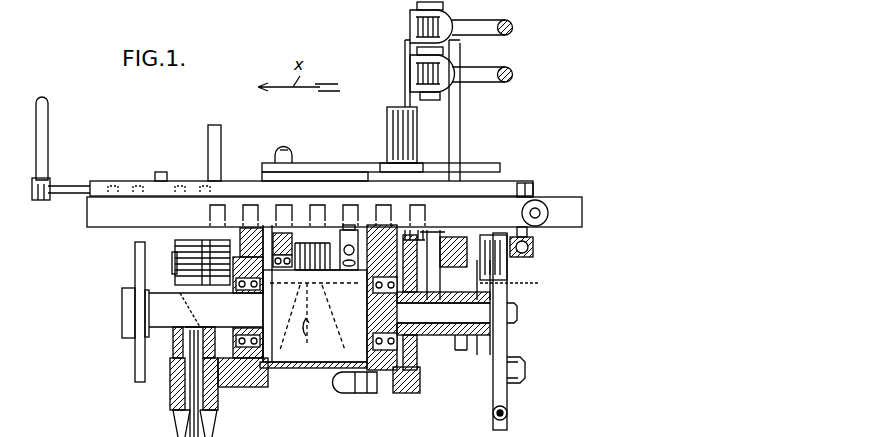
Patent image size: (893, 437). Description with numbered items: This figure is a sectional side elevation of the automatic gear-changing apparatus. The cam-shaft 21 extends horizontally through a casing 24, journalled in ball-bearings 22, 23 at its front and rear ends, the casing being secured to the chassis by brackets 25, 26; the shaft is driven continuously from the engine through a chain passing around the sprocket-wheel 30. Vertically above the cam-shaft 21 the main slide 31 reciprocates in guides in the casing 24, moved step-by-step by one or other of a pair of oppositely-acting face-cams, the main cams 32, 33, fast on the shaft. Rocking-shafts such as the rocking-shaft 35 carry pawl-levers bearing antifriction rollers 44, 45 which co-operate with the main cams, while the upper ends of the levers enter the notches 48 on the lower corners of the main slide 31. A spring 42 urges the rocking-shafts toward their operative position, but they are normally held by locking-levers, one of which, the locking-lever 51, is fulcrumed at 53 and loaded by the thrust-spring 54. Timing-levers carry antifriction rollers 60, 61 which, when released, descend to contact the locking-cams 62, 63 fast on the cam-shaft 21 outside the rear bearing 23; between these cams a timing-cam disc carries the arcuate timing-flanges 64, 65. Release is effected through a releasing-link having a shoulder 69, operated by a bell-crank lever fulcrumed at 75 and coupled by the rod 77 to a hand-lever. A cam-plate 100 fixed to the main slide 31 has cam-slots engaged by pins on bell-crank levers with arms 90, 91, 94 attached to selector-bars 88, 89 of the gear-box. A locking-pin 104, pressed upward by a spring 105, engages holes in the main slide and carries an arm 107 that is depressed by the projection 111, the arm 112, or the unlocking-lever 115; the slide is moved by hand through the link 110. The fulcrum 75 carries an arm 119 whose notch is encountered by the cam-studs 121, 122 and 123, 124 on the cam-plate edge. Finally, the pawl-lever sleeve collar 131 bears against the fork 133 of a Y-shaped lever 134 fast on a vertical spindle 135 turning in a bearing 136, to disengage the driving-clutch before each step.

The cam-shaft 21 is at (123, 303).
The ball-bearing 22 is at (250, 385).
The ball-bearing 23 is at (392, 400).
The casing 24 is at (305, 370).
The bracket 25 is at (213, 125).
The bracket 26 is at (458, 103).
The sprocket-wheel 30 is at (135, 258).
The main slide 31 is at (100, 218).
The main cam 32 is at (285, 325).
The main cam 33 is at (340, 370).
The rocking-shaft 35 is at (172, 262).
The spring 42 is at (485, 242).
The antifriction roller 44 is at (282, 233).
The antifriction roller 45 is at (348, 228).
The notches 48 is at (213, 213).
The locking-lever 51 is at (506, 398).
The fulcrum 53 is at (525, 372).
The thrust-spring 54 is at (506, 416).
The antifriction roller 60 is at (470, 242).
The antifriction roller 61 is at (510, 266).
The locking-cam 62 is at (462, 350).
The locking-cam 63 is at (506, 283).
The timing-flange 64 is at (478, 356).
The timing-flange 65 is at (506, 348).
The shoulder 69 is at (535, 250).
The fulcrum 75 is at (65, 192).
The rod 77 is at (48, 143).
The selector-bar 88 is at (513, 28).
The selector-bar 89 is at (513, 74).
The arm of bell-crank lever 90 is at (413, 25).
The arm of bell-crank lever 91 is at (413, 70).
The arm of bell-crank lever 94 is at (310, 163).
The cam-plate 100 is at (236, 181).
The locking-pin 104 is at (413, 222).
The spring 105 is at (412, 290).
The arm 107 is at (516, 313).
The link 110 is at (562, 210).
The projection 111 is at (452, 242).
The arm 112 is at (440, 240).
The unlocking-lever 115 is at (430, 238).
The arm 119 is at (157, 382).
The cam-stud 121 is at (113, 184).
The cam-stud 122 is at (180, 184).
The cam-stud 123 is at (137, 184).
The cam-stud 124 is at (203, 184).
The collar 131 is at (215, 285).
The fork 133 is at (176, 285).
The Y-shaped lever 134 is at (170, 343).
The vertical spindle 135 is at (190, 375).
The bearing 136 is at (175, 397).